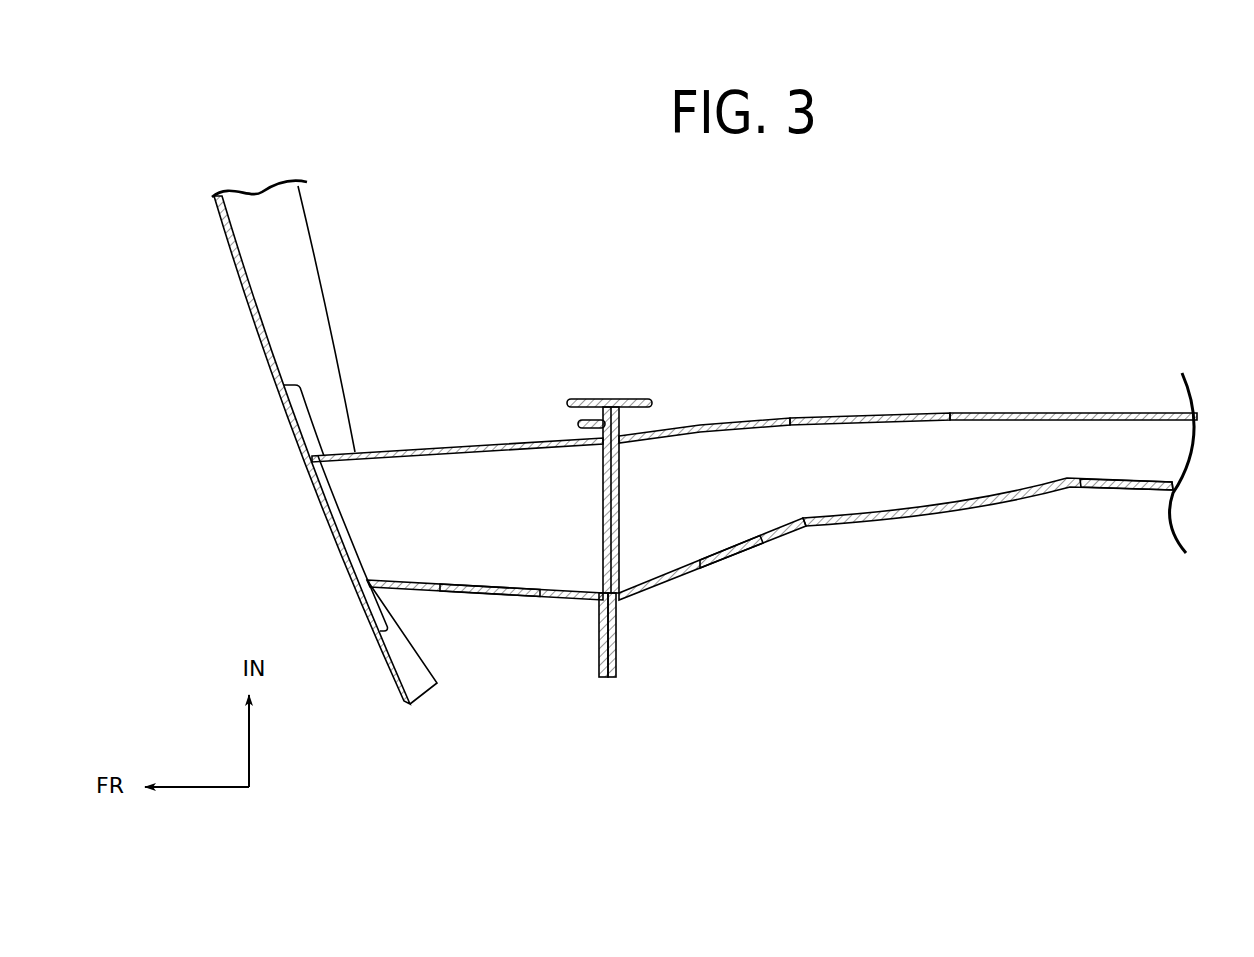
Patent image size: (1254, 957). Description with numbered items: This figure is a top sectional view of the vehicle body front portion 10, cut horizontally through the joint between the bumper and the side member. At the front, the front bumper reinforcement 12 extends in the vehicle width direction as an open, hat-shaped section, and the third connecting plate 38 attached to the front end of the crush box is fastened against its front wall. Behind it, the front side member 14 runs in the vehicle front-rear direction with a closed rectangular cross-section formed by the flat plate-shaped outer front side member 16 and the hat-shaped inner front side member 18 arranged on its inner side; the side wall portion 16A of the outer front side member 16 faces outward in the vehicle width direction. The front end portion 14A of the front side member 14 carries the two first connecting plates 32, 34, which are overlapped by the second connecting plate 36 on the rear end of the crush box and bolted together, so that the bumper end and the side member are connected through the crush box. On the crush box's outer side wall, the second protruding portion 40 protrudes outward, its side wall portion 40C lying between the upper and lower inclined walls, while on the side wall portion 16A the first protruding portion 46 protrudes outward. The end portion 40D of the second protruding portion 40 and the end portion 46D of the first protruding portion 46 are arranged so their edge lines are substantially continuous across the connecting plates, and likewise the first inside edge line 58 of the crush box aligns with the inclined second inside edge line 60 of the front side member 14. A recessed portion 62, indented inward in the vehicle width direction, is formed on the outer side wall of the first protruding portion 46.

The vehicle body front portion 10 is at (232, 389).
The front bumper reinforcement 12 is at (233, 265).
The front side member 14 is at (908, 402).
The front end portion of the front side member 14A is at (699, 424).
The outer front side member 16 is at (988, 540).
The side wall portion of the outer front side member 16A is at (1112, 489).
The inner front side member 18 is at (1080, 413).
The first connecting plate 32 is at (647, 398).
The first connecting plate 34 is at (587, 397).
The second connecting plate 36 is at (578, 423).
The third connecting plate 38 is at (356, 447).
The second protruding portion 40 is at (487, 666).
The side wall portion of the second protruding portion 40C is at (518, 601).
The end portion of the second protruding portion 40D is at (595, 601).
The first protruding portion 46 is at (707, 628).
The end portion of the first protruding portion 46D is at (628, 601).
The first inside edge line 58 is at (482, 442).
The second inside edge line 60 is at (780, 417).
The recessed portion 62 is at (733, 556).